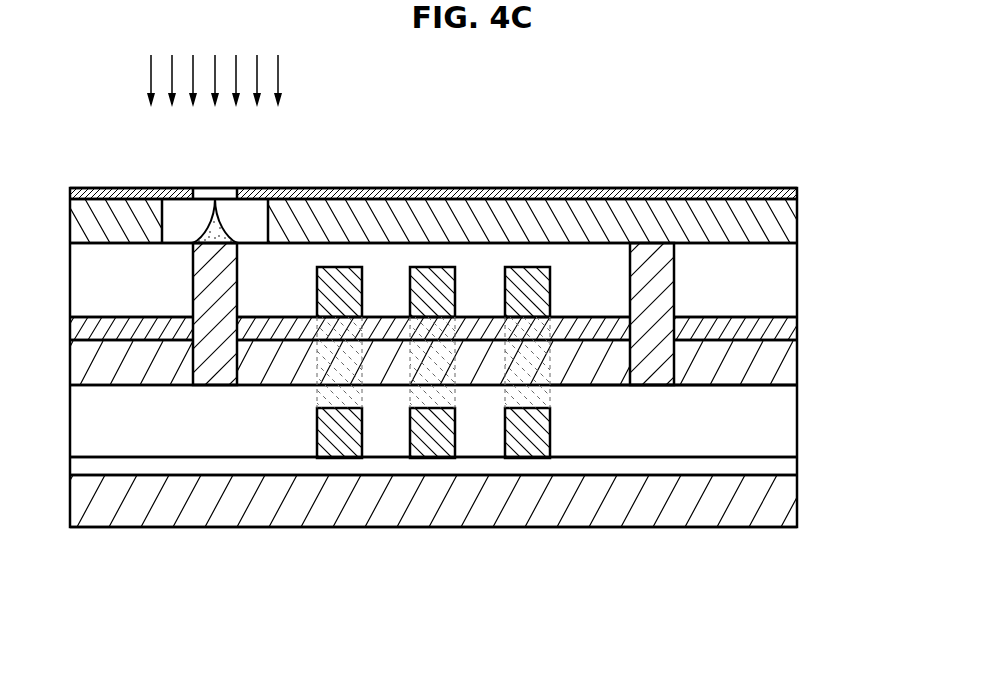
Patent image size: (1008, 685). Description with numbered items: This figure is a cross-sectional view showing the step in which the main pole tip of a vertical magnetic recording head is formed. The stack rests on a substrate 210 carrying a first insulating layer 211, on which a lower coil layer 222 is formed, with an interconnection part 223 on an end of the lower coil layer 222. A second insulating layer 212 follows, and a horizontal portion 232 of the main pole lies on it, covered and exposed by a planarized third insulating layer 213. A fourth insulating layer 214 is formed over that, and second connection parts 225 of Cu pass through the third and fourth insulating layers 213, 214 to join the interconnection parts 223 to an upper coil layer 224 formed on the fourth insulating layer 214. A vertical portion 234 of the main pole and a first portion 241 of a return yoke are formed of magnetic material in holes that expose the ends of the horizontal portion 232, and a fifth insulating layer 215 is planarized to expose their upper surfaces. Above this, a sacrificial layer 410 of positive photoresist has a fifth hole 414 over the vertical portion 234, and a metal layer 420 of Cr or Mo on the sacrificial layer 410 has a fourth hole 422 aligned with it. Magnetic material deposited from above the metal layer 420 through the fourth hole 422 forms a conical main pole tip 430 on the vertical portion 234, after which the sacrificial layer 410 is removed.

The substrate 210 is at (793, 503).
The first insulating layer 211 is at (790, 465).
The second insulating layer 212 is at (795, 423).
The third insulating layer 213 is at (787, 363).
The fourth insulating layer 214 is at (792, 332).
The fifth insulating layer 215 is at (780, 272).
The lower coil layer 222 is at (342, 447).
The interconnection part 223 is at (320, 402).
The upper coil layer 224 is at (432, 285).
The second connection part 225 is at (353, 323).
The horizontal portion of main pole 232 is at (617, 370).
The vertical portion of main pole 234 is at (200, 285).
The first portion of return yoke 241 is at (667, 302).
The sacrificial layer 410 is at (793, 222).
The fifth hole 414 is at (243, 223).
The metal layer 420 is at (792, 193).
The fourth hole 422 is at (198, 187).
The main pole tip 430 is at (223, 207).